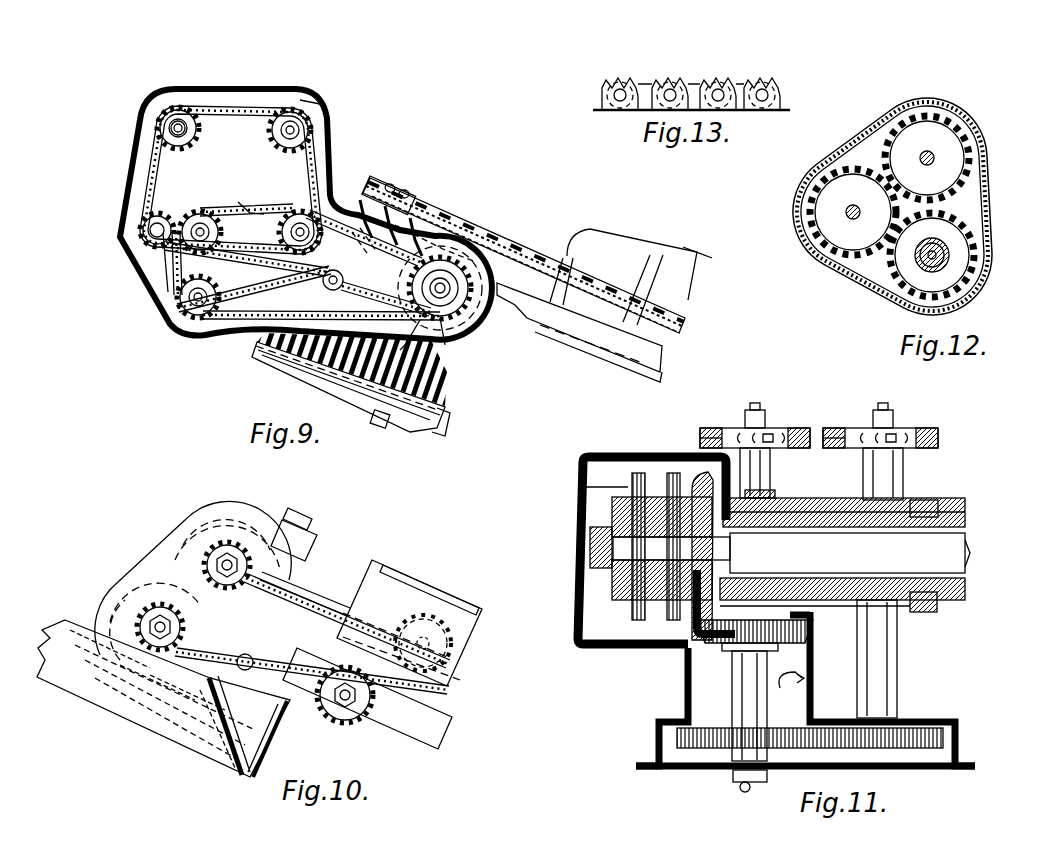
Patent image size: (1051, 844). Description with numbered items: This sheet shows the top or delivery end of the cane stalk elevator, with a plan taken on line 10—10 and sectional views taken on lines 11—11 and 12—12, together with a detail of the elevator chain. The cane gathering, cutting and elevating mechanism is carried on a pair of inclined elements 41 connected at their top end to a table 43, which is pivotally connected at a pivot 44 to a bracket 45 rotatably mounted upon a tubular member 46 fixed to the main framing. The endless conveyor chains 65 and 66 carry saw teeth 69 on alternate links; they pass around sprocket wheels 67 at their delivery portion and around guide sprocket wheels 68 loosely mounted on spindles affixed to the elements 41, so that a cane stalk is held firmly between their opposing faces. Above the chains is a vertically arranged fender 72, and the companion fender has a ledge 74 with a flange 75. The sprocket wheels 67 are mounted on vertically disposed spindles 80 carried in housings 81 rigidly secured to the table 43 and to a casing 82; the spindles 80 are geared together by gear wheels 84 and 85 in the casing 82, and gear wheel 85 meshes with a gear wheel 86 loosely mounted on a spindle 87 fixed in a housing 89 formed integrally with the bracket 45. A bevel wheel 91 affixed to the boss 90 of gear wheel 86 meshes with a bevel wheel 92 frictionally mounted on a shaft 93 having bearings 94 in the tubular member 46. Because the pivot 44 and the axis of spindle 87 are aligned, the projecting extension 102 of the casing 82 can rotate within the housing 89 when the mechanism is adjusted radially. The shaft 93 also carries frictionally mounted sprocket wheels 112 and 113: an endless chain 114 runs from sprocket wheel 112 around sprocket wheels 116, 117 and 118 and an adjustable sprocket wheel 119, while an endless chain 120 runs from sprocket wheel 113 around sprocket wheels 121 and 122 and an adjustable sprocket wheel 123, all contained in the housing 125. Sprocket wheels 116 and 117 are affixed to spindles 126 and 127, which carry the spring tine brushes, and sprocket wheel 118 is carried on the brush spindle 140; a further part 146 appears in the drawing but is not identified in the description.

In FIG. 9, the line 10— 10 is at (410, 127).
In FIG. 9, the line 11— 11 is at (483, 210).
In FIG. 9, the line 12— 12 is at (253, 337).
In FIG. 9, the inclined elements 41 is at (590, 345).
In FIG. 10, the inclined elements 41 is at (480, 663).
In FIG. 9, the table 43 is at (522, 285).
In FIG. 10, the table 43 is at (355, 580).
In FIG. 11, the table 43 is at (808, 498).
In FIG. 10, the pivot 44 is at (244, 662).
In FIG. 11, the pivot 44 is at (775, 492).
In FIG. 11, the bracket 45 is at (906, 500).
In FIG. 10, the tubular member 46 is at (310, 527).
In FIG. 11, the tubular member 46 is at (935, 605).
In FIG. 10, the endless conveyor chain 65 is at (300, 632).
In FIG. 11, the endless conveyor chain 65 is at (841, 428).
In FIG. 9, the endless conveyor chain 66 is at (482, 262).
In FIG. 13, the endless conveyor chain 66 is at (650, 86).
In FIG. 10, the endless conveyor chain 66 is at (298, 655).
In FIG. 11, the endless conveyor chain 66 is at (710, 427).
In FIG. 9, the sprocket wheels 67 is at (398, 185).
In FIG. 10, the sprocket wheels 67 is at (205, 566).
In FIG. 11, the sprocket wheels 67 is at (726, 427).
In FIG. 9, the guide sprocket wheels 68 is at (600, 285).
In FIG. 10, the guide sprocket wheels 68 is at (342, 705).
In FIG. 13, the saw teeth 69 is at (698, 90).
In FIG. 9, the fender 72 is at (635, 252).
In FIG. 10, the ledge 74 is at (462, 636).
In FIG. 10, the flange 75 is at (412, 580).
In FIG. 12, the spindles 80 is at (935, 160).
In FIG. 10, the spindles 80 is at (222, 560).
In FIG. 11, the spindles 80 is at (758, 409).
In FIG. 9, the housings 81 is at (382, 219).
In FIG. 11, the housings 81 is at (768, 470).
In FIG. 9, the casing 82 is at (300, 346).
In FIG. 12, the casing 82 is at (993, 214).
In FIG. 10, the casing 82 is at (235, 505).
In FIG. 11, the casing 82 is at (655, 735).
In FIG. 12, the gear wheel 84 is at (940, 145).
In FIG. 11, the gear wheel 84 is at (888, 768).
In FIG. 12, the gear wheel 85 is at (835, 195).
In FIG. 12, the gear wheel 86 is at (950, 252).
In FIG. 11, the gear wheel 86 is at (725, 745).
In FIG. 12, the spindle 87 is at (938, 265).
In FIG. 11, the spindle 87 is at (672, 646).
In FIG. 9, the housing 89 is at (468, 352).
In FIG. 11, the housing 89 is at (812, 636).
In FIG. 12, the boss 90 is at (920, 265).
In FIG. 11, the boss 90 is at (730, 700).
In FIG. 9, the bevel wheel 91 is at (455, 355).
In FIG. 11, the bevel wheel 91 is at (728, 648).
In FIG. 9, the bevel wheel 92 is at (477, 258).
In FIG. 11, the bevel wheel 92 is at (690, 606).
In FIG. 9, the shaft 93 is at (450, 296).
In FIG. 11, the shaft 93 is at (925, 553).
In FIG. 11, the bearings 94 is at (850, 600).
In FIG. 9, the projecting extension 102 is at (395, 366).
In FIG. 11, the projecting extension 102 is at (816, 682).
In FIG. 10, the sprocket wheel 112 is at (205, 722).
In FIG. 11, the sprocket wheel 112 is at (637, 470).
In FIG. 9, the sprocket wheel 113 is at (455, 288).
In FIG. 10, the sprocket wheel 113 is at (225, 745).
In FIG. 11, the sprocket wheel 113 is at (586, 487).
In FIG. 9, the endless chain 114 is at (312, 160).
In FIG. 10, the endless chain 114 is at (172, 702).
In FIG. 11, the endless chain 114 is at (673, 470).
In FIG. 9, the sprocket wheel 116 is at (300, 118).
In FIG. 9, the sprocket wheel 117 is at (160, 116).
In FIG. 9, the sprocket wheel 118 is at (301, 230).
In FIG. 9, the adjustable sprocket wheel 119 is at (145, 232).
In FIG. 9, the endless chain 120 is at (256, 222).
In FIG. 10, the endless chain 120 is at (132, 702).
In FIG. 11, the endless chain 120 is at (632, 473).
In FIG. 9, the sprocket wheel 121 is at (195, 240).
In FIG. 9, the sprocket wheel 122 is at (180, 302).
In FIG. 9, the adjustable sprocket wheel 123 is at (325, 286).
In FIG. 9, the housing 125 is at (125, 192).
In FIG. 10, the housing 125 is at (90, 702).
In FIG. 11, the housing 125 is at (573, 563).
In FIG. 9, the spindle 126 is at (288, 131).
In FIG. 9, the spindle 127 is at (180, 130).
In FIG. 9, the spindle 140 is at (298, 236).
In FIG. 9, the shaft 146 is at (165, 238).